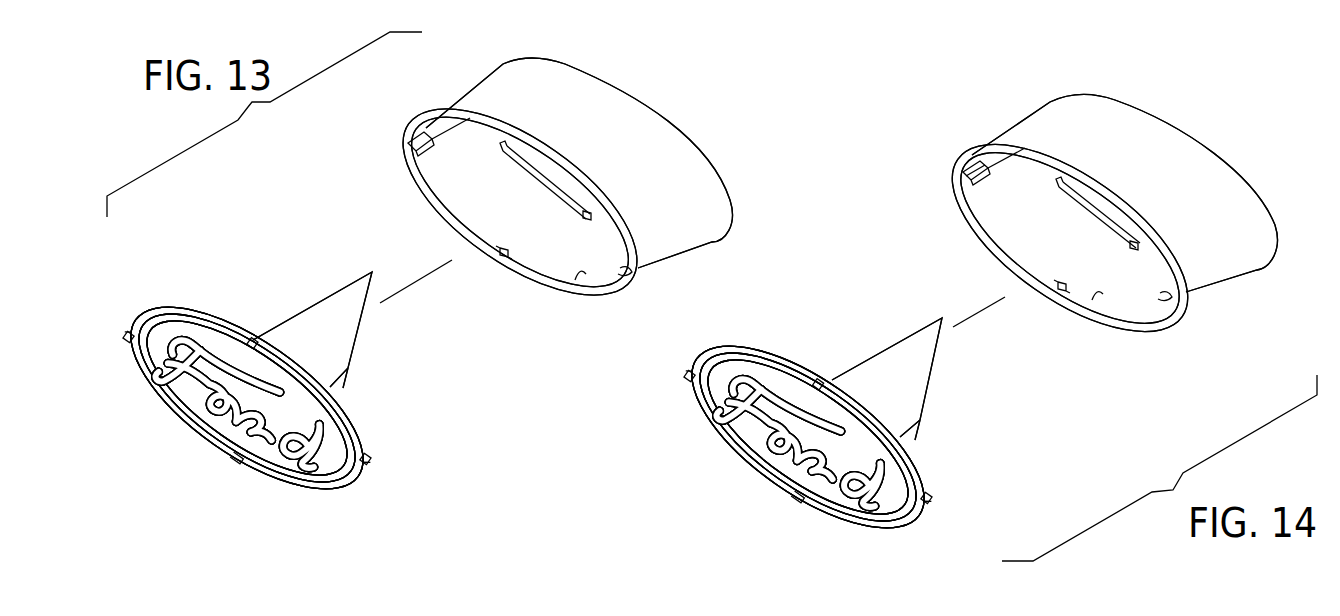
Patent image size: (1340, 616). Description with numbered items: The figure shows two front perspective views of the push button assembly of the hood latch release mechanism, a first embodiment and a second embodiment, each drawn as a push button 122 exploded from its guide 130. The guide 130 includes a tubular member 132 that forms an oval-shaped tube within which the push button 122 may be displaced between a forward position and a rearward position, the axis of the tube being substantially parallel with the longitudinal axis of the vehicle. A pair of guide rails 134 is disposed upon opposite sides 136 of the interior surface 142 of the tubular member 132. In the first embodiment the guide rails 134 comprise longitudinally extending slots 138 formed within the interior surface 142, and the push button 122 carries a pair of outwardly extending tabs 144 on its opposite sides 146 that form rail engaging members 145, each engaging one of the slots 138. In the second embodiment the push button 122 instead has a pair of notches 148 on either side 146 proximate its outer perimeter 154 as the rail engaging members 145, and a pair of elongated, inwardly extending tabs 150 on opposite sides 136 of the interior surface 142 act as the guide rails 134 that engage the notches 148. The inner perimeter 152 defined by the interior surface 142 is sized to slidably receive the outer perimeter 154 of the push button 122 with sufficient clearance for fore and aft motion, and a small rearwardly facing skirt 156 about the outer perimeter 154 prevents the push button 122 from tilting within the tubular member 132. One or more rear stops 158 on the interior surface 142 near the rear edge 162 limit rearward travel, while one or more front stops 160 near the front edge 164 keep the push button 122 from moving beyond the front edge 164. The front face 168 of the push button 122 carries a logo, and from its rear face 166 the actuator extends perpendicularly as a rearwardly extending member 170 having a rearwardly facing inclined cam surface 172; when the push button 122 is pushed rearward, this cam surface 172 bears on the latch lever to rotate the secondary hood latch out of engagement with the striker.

In FIG. 13, the push button 122 is at (227, 430).
In FIG. 14, the push button 122 is at (787, 470).
In FIG. 13, the guide 130 is at (509, 97).
In FIG. 14, the guide 130 is at (1108, 117).
In FIG. 13, the tubular member 132 is at (655, 137).
In FIG. 14, the tubular member 132 is at (1200, 177).
In FIG. 13, the guide rails 134 is at (423, 134).
In FIG. 14, the guide rails 134 is at (988, 168).
In FIG. 13, the opposite sides 136 is at (433, 172).
In FIG. 14, the opposite sides 136 is at (985, 202).
In FIG. 13, the longitudinally extending slots 138 is at (410, 146).
In FIG. 13, the interior surface 142 is at (541, 238).
In FIG. 14, the interior surface 142 is at (1107, 267).
In FIG. 13, the outwardly extending tabs 144 is at (128, 333).
In FIG. 13, the rail engaging members 145 is at (127, 341).
In FIG. 14, the rail engaging members 145 is at (702, 398).
In FIG. 13, the opposite sides 146 is at (363, 438).
In FIG. 14, the opposite sides 146 is at (705, 413).
In FIG. 14, the notches 148 is at (700, 387).
In FIG. 14, the elongated inwardly extending tabs 150 is at (977, 173).
In FIG. 13, the inner perimeter 152 is at (580, 275).
In FIG. 14, the inner perimeter 152 is at (1097, 293).
In FIG. 13, the outer perimeter 154 is at (243, 462).
In FIG. 14, the outer perimeter 154 is at (810, 507).
In FIG. 13, the rearwardly facing skirt 156 is at (352, 425).
In FIG. 14, the rearwardly facing skirt 156 is at (912, 470).
In FIG. 13, the rear stops 158 is at (583, 206).
In FIG. 14, the rear stops 158 is at (1132, 232).
In FIG. 13, the front stops 160 is at (500, 252).
In FIG. 14, the front stops 160 is at (1062, 282).
In FIG. 13, the rear edge 162 is at (550, 182).
In FIG. 14, the rear edge 162 is at (1095, 215).
In FIG. 13, the front edge 164 is at (422, 118).
In FIG. 14, the front edge 164 is at (965, 195).
In FIG. 13, the rear face 166 is at (238, 320).
In FIG. 14, the rear face 166 is at (807, 353).
In FIG. 13, the front face 168 is at (187, 403).
In FIG. 14, the front face 168 is at (757, 443).
In FIG. 13, the rearwardly extending member 170 is at (305, 340).
In FIG. 14, the rearwardly extending member 170 is at (873, 370).
In FIG. 13, the inclined cam surface 172 is at (385, 364).
In FIG. 14, the inclined cam surface 172 is at (933, 378).